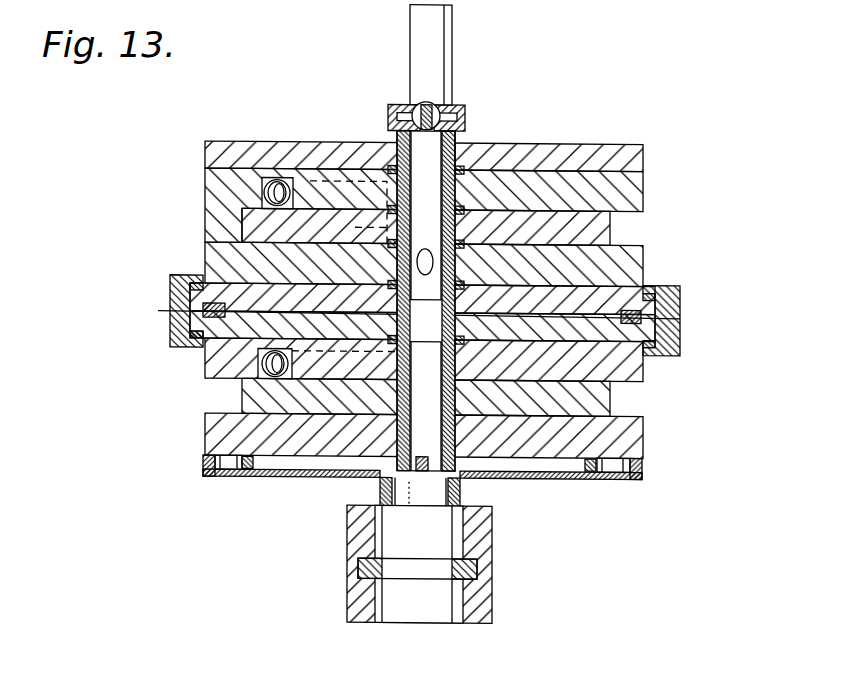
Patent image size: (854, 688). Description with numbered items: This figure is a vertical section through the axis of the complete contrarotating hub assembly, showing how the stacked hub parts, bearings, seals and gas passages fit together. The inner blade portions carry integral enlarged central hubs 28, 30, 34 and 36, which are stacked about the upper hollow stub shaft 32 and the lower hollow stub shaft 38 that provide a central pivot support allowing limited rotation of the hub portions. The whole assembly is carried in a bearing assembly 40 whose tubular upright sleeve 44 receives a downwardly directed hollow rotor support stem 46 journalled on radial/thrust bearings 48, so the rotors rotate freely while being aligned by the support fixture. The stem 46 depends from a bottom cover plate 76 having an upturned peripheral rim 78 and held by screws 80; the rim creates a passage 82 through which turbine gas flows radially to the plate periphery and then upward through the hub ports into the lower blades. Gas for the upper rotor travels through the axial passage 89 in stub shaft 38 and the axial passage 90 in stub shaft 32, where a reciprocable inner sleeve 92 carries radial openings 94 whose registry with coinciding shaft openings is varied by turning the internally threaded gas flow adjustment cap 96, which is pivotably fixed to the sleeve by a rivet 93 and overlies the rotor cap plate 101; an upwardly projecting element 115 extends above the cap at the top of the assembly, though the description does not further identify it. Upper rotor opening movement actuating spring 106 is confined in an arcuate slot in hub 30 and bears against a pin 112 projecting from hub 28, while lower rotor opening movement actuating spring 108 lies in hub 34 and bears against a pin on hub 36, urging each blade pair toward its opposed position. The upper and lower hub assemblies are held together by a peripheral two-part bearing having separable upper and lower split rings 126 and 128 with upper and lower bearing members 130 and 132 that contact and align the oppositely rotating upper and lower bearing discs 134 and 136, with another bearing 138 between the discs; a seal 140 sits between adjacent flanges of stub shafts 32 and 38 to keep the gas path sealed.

The actuating rod 115 is at (453, 37).
The rivet 93 is at (418, 101).
The gas flow adjustment cap 96 is at (458, 116).
The rotor cap plate 101 is at (262, 141).
The pin 112 is at (355, 142).
The upper hollow stub shaft 32 is at (391, 123).
The inner sleeve 92 is at (456, 156).
The upper rotor opening movement actuating spring 106 is at (262, 191).
The central hub 30 is at (222, 214).
The central hub 28 is at (242, 232).
The upper bearing member 130 is at (178, 288).
The upper bearing disc 134 is at (618, 298).
The upper split ring 126 is at (175, 298).
The bearing 138 is at (170, 314).
The lower split ring 128 is at (175, 334).
The lower bearing member 132 is at (203, 340).
The lower rotor opening movement actuating spring 108 is at (262, 365).
The lower bearing disc 136 is at (612, 392).
The central hub 36 is at (245, 398).
The central hub 34 is at (215, 440).
The upturned peripheral rim 78 is at (208, 468).
The bottom cover plate 76 is at (219, 477).
The screws 80 is at (250, 466).
The passage 82 is at (318, 473).
The lower hollow stub shaft 38 is at (435, 465).
The bearing assembly 40 is at (345, 564).
The tubular upright sleeve 44 is at (488, 546).
The radial/thrust bearings 48 is at (478, 579).
The rotor support stem 46 is at (435, 611).
The axial passage 89 is at (435, 441).
The axial passage 90 is at (440, 198).
The radial openings 94 is at (425, 245).
The seal 140 is at (431, 321).